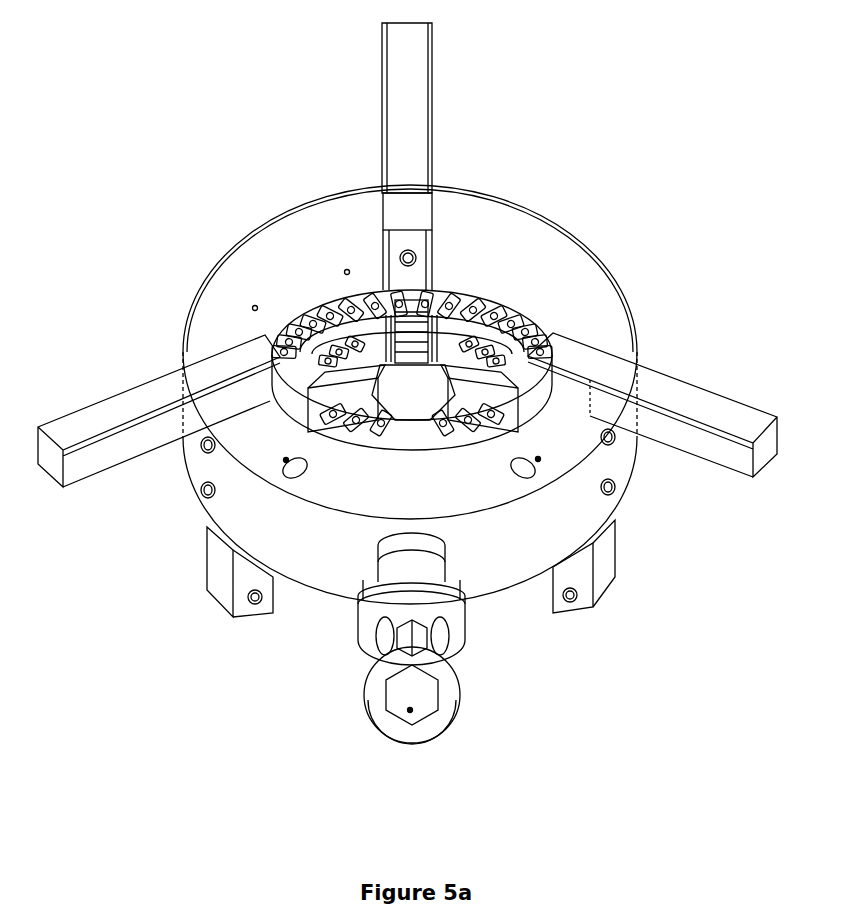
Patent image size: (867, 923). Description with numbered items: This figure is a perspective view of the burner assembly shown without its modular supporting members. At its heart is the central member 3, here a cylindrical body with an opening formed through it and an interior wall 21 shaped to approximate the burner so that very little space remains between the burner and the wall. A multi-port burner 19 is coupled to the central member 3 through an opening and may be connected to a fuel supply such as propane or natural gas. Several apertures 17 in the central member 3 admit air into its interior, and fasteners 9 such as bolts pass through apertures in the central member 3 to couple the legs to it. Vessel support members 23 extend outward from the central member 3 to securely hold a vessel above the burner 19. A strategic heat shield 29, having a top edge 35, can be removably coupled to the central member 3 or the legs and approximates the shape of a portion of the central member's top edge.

The central member 3 is at (530, 587).
The fasteners 9 is at (611, 492).
The apertures 17 is at (290, 465).
The burner 19 is at (398, 380).
The interior wall 21 is at (410, 352).
The vessel support members 23 is at (407, 255).
The strategic heat shield 29 is at (412, 422).
The top edge 35 is at (567, 397).